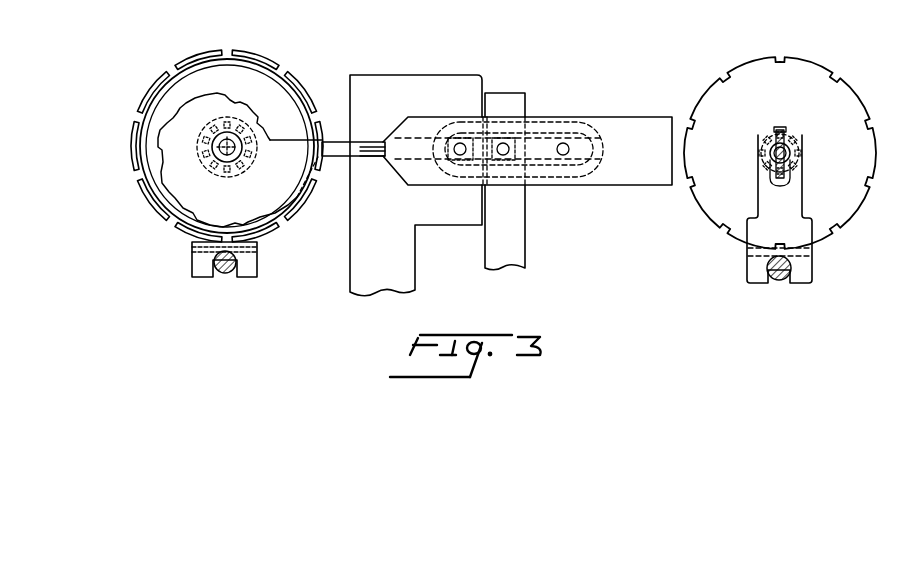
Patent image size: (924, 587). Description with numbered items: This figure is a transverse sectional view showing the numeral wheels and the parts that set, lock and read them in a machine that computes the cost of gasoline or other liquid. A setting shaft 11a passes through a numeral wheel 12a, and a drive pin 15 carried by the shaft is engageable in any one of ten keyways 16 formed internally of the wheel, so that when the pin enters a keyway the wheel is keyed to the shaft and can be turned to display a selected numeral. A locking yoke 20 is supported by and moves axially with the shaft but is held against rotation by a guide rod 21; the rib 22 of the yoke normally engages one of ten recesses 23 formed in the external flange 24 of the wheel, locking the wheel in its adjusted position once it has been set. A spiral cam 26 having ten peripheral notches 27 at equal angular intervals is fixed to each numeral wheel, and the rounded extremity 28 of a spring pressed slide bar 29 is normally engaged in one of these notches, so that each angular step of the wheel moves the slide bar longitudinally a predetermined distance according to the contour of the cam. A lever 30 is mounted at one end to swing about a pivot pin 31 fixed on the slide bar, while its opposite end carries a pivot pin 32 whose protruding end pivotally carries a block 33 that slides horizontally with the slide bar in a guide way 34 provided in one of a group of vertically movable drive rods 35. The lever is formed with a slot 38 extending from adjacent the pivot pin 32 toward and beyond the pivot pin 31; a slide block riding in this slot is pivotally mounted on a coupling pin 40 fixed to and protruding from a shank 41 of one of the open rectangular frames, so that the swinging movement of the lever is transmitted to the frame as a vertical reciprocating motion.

The setting shaft 11a is at (748, 153).
The numeral wheel 12a is at (856, 200).
The drive pin 15 is at (771, 135).
The keyway 16 is at (252, 189).
The locking yoke 20 is at (793, 229).
The guide rod 21 is at (497, 288).
The rib 22 is at (517, 259).
The recess 23 is at (496, 137).
The external flange 24 is at (207, 146).
The spiral cam 26 is at (311, 167).
The peripheral notch 27 is at (219, 154).
The rounded extremity 28 is at (353, 129).
The slide bar 29 is at (645, 179).
The lever 30 is at (535, 126).
The pivot pin 31 is at (598, 141).
The pivot pin 32 is at (460, 124).
The block 33 is at (469, 139).
The guide way 34 is at (374, 180).
The drive rod 35 is at (397, 251).
The slot 38 is at (518, 134).
The coupling pin 40 is at (503, 129).
The shank 41 is at (522, 181).